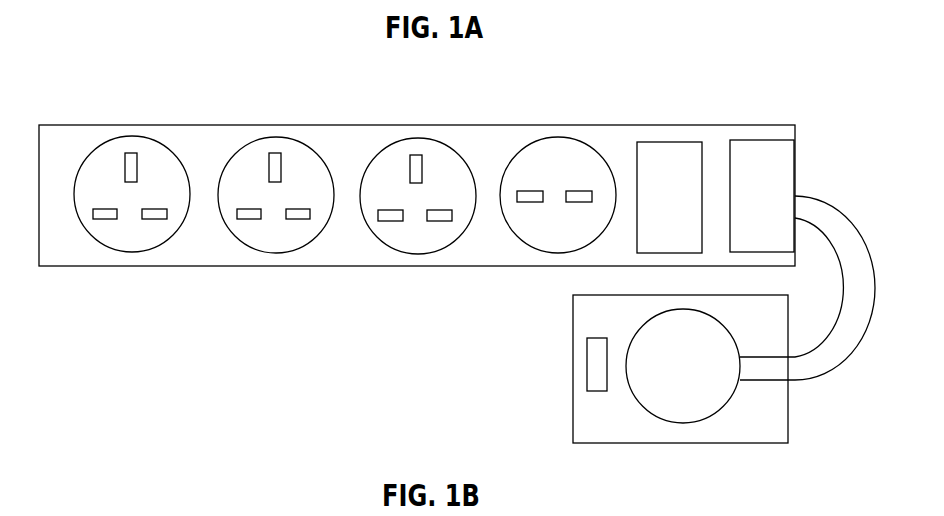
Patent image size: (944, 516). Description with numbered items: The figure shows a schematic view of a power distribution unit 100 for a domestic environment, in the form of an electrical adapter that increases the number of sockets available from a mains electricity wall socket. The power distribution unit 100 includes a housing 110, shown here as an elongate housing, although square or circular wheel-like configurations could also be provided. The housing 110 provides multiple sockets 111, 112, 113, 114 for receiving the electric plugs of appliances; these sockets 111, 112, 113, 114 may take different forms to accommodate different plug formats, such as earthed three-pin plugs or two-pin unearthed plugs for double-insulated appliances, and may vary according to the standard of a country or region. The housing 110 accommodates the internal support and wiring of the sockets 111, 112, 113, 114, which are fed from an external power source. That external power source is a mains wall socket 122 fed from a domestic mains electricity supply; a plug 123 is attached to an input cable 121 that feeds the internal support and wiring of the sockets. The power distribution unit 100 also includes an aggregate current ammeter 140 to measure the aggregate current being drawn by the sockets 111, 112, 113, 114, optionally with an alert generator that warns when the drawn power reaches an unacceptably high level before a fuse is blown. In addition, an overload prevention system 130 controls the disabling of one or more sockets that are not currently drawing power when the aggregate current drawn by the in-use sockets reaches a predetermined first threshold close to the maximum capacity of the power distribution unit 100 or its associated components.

The power distribution unit 100 is at (75, 100).
The housing 110 is at (242, 266).
The socket 111 is at (172, 153).
The socket 112 is at (325, 167).
The socket 113 is at (460, 158).
The socket 114 is at (606, 153).
The overload prevention system 130 is at (700, 142).
The aggregate current ammeter 140 is at (770, 140).
The input cable 121 is at (830, 367).
The mains wall socket 122 is at (630, 415).
The plug 123 is at (728, 405).